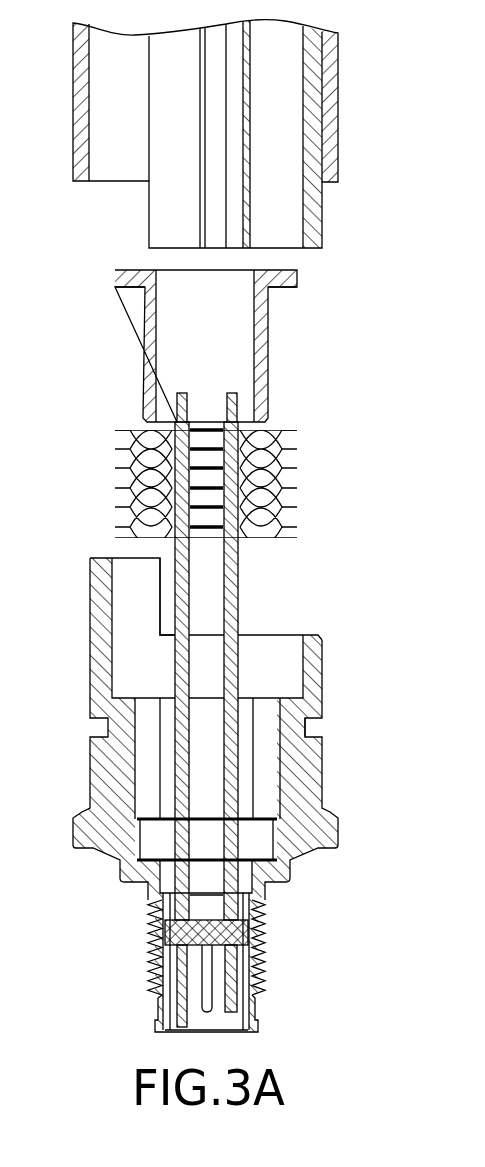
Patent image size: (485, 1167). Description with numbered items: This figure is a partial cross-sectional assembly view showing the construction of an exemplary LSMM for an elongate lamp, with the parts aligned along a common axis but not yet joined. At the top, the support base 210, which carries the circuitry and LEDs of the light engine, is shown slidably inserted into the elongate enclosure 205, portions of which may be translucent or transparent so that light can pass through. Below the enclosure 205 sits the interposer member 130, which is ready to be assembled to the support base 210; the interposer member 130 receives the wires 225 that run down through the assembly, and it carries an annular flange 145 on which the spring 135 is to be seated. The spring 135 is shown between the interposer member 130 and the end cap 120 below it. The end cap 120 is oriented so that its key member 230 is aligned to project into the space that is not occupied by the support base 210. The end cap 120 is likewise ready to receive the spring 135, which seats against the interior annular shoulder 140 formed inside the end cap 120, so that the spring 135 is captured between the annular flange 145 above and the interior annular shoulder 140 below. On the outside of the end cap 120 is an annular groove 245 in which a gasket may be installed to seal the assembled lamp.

The end cap 120 is at (277, 882).
The interposer member 130 is at (243, 346).
The spring 135 is at (292, 489).
The interior annular shoulder 140 is at (217, 781).
The annular flange 145 is at (285, 288).
The elongate enclosure 205 is at (325, 172).
The support base 210 is at (318, 244).
The wires 225 is at (245, 598).
The key member 230 is at (160, 592).
The annular groove 245 is at (313, 730).